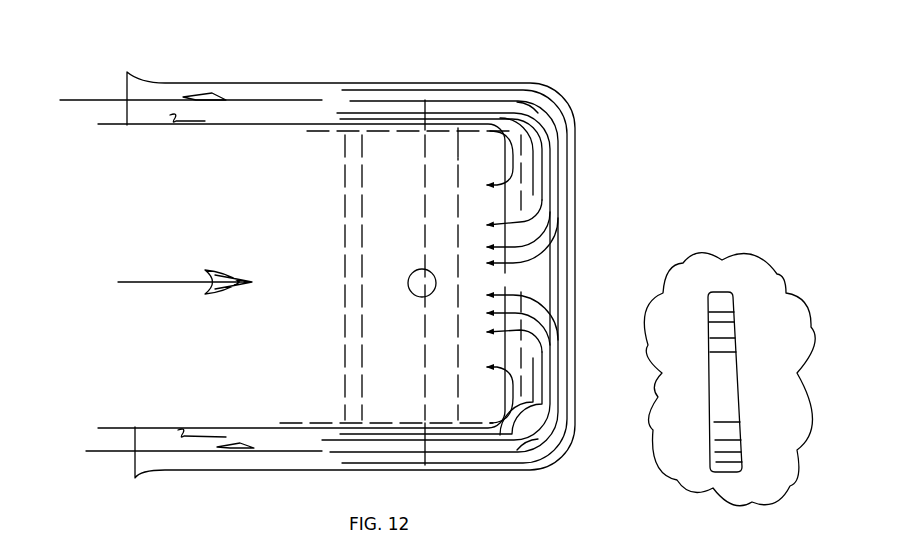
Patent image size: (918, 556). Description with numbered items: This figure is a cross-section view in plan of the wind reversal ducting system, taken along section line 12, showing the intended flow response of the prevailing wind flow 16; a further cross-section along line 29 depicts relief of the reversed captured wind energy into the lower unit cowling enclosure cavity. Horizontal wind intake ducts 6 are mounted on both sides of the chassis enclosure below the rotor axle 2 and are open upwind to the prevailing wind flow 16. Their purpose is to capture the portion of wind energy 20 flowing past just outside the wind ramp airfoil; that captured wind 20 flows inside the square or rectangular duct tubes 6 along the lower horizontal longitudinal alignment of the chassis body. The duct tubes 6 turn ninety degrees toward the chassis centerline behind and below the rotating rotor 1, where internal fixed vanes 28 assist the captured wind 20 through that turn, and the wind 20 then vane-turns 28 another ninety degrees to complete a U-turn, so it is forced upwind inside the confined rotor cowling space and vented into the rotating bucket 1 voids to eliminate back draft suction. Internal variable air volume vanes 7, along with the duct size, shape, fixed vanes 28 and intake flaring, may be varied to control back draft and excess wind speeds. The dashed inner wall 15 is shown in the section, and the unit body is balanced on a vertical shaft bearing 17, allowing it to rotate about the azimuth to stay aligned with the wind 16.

The rotor 1 is at (362, 185).
The rotor axle 2 is at (425, 100).
The horizontal wind intake duct 6 is at (227, 82).
The internal variable air volume vane 7 is at (182, 120).
The section line 12 is at (634, 55).
The inner wall 15 is at (362, 135).
The prevailing wind flow 16 is at (147, 282).
The vertical shaft bearing 17 is at (435, 279).
The captured wind energy 20 is at (97, 100).
The internal fixed vane 28 is at (503, 252).
The section line 29 is at (473, 428).